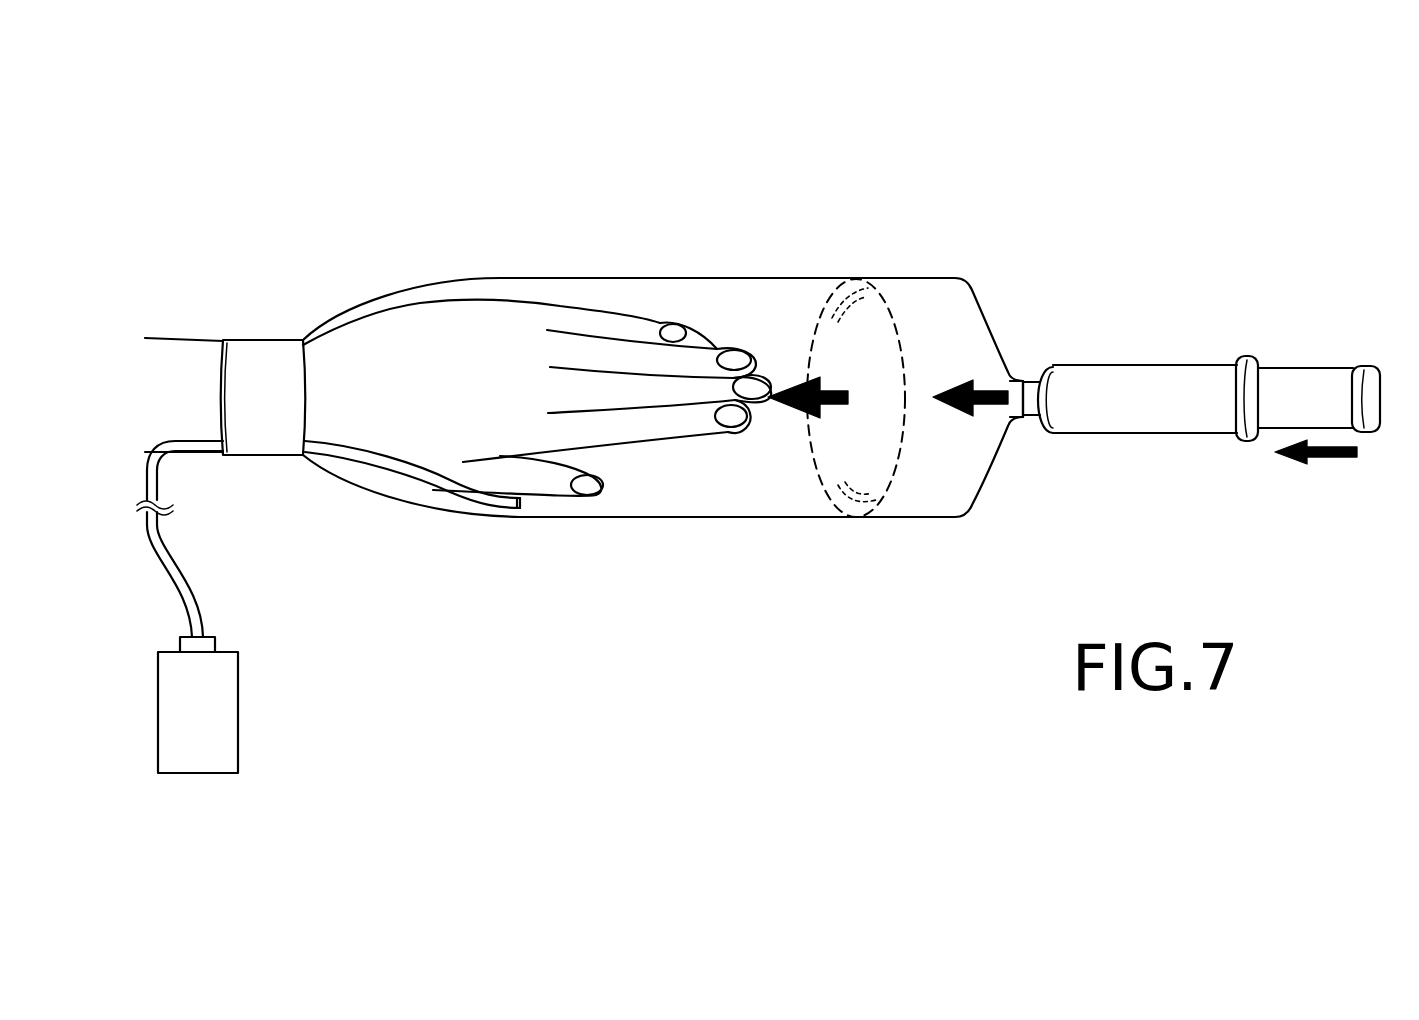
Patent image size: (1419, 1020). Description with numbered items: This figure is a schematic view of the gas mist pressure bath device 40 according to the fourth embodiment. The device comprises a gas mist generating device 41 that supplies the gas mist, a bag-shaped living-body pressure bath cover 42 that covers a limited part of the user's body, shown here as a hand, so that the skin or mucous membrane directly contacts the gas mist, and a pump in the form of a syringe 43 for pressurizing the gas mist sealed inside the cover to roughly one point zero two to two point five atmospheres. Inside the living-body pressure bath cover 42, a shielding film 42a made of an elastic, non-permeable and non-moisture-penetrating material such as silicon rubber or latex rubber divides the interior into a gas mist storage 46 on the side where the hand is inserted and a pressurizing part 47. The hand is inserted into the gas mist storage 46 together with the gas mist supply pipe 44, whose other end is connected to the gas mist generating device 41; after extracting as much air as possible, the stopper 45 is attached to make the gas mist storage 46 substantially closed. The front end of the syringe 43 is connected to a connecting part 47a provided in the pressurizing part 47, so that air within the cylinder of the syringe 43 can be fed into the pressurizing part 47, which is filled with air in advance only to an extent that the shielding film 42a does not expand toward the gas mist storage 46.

The gas mist pressure bath device 40 is at (1319, 158).
The gas mist generating device 41 is at (223, 650).
The living-body pressure bath cover 42 is at (985, 257).
The shielding film 42a is at (858, 296).
The syringe 43 is at (1194, 365).
The gas mist supply pipe 44 is at (378, 477).
The stopper 45 is at (265, 338).
The gas mist storage 46 is at (727, 498).
The pressurizing part 47 is at (936, 497).
The connecting part 47a is at (1013, 372).